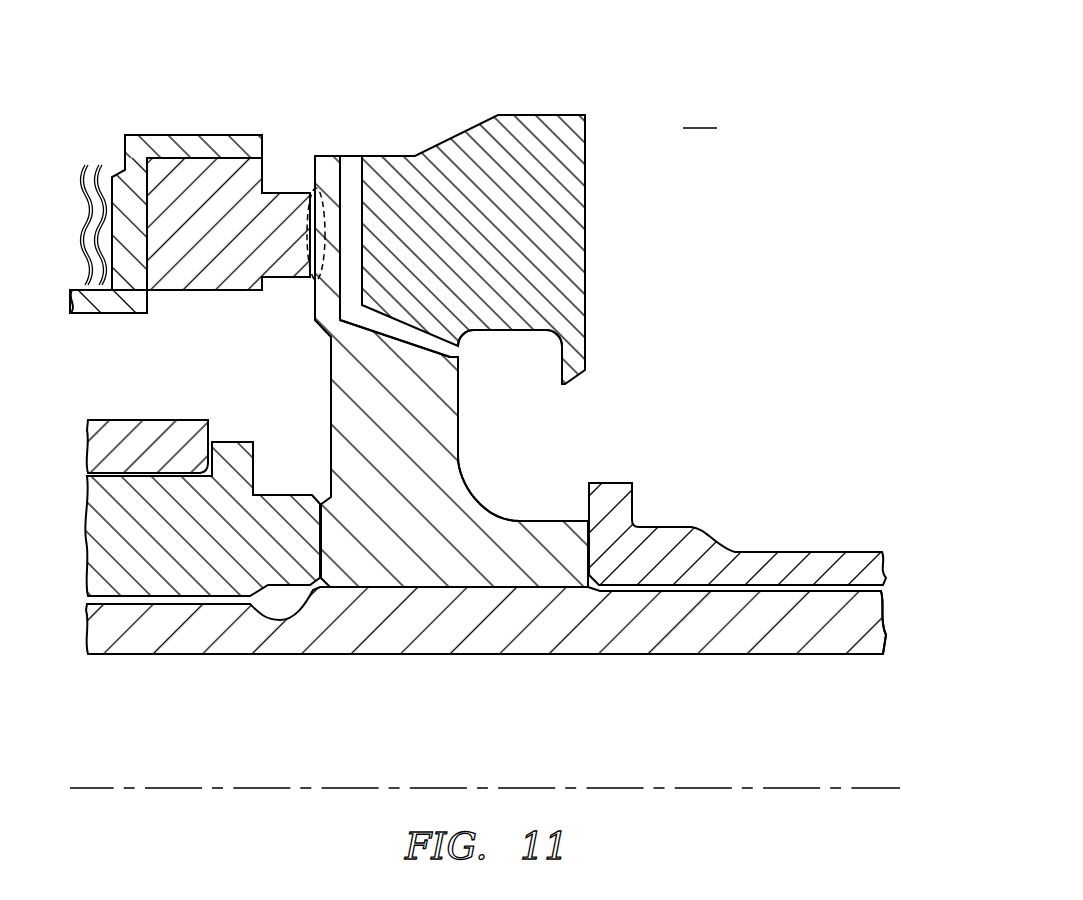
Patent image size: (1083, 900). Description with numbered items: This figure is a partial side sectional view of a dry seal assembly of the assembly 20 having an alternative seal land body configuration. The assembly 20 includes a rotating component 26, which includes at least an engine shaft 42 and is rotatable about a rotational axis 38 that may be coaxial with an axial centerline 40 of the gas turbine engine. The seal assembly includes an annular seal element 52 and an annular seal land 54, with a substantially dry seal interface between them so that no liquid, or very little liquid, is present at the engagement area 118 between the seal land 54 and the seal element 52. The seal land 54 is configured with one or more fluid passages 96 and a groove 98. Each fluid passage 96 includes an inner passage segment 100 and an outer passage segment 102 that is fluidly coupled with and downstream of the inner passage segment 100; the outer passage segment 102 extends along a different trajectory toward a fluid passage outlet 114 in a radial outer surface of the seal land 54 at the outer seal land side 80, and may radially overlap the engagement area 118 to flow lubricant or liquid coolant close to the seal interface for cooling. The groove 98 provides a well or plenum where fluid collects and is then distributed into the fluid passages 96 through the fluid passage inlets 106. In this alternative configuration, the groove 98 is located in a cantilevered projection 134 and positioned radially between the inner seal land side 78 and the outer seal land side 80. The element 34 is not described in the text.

The assembly 20 is at (696, 72).
The rotating component 26 is at (680, 672).
The core flow path 34 is at (700, 114).
The rotational axis 38 is at (126, 568).
The axial centerline 40 is at (95, 788).
The engine shaft 42 is at (862, 654).
The seal element 52 is at (224, 300).
The seal land 54 is at (557, 110).
The inner seal land side 78 is at (420, 590).
The outer seal land side 80 is at (520, 113).
The fluid passage 96 is at (366, 245).
The groove 98 is at (535, 375).
The inner passage segment 100 is at (405, 325).
The outer passage segment 102 is at (355, 202).
The fluid passage inlet 106 is at (480, 352).
The fluid passage outlet 114 is at (350, 155).
The engagement area 118 is at (302, 235).
The cantilevered projection 134 is at (585, 315).